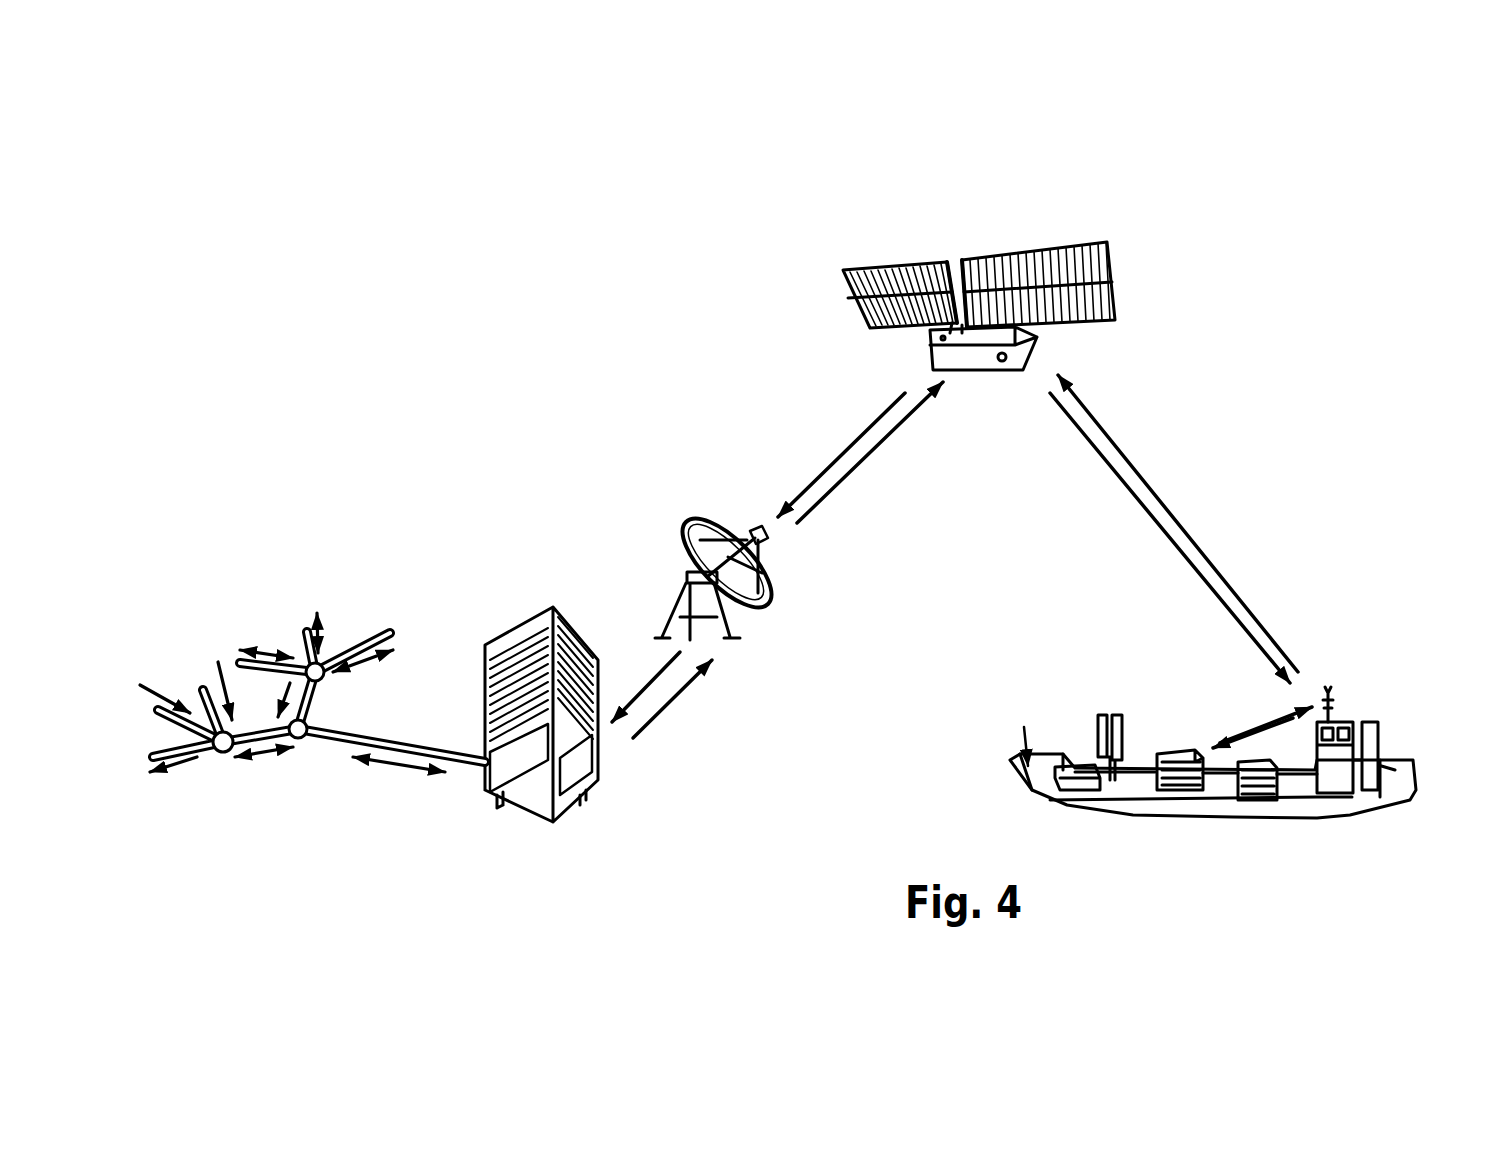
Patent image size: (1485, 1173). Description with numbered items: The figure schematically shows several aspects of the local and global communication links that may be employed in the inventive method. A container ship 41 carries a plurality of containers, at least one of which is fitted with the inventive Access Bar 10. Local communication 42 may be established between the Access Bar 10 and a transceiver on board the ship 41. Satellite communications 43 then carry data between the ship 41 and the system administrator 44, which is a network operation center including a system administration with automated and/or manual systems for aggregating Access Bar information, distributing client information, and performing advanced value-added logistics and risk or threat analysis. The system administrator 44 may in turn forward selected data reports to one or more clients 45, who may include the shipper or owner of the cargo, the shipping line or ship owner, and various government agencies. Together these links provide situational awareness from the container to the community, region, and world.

The Access Bar 10 is at (1190, 745).
The container ship 41 is at (1187, 735).
The local communication 42 is at (1258, 712).
The satellite communications 43 is at (1323, 665).
The network operation center 44 is at (580, 818).
The clients 45 is at (238, 605).